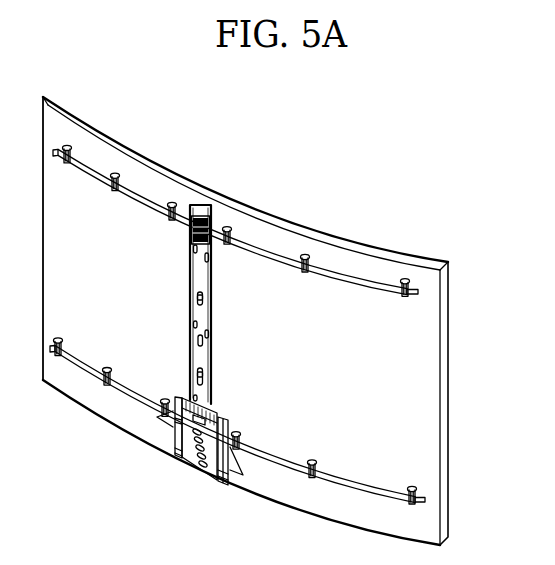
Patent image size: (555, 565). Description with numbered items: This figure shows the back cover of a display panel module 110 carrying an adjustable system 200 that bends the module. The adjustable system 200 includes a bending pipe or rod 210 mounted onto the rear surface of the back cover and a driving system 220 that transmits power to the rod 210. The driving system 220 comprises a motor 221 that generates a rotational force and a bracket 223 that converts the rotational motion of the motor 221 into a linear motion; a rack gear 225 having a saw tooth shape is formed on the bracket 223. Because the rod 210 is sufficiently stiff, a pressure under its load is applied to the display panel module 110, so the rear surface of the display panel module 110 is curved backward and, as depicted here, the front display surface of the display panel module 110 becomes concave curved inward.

The display panel module 110 is at (430, 261).
The adjustable system 200 is at (288, 324).
The bending pipe or rod 210 is at (240, 249).
The driving system 220 is at (150, 345).
The motor 221 is at (177, 411).
The bracket 223 is at (193, 312).
The rack gear 225 is at (190, 237).